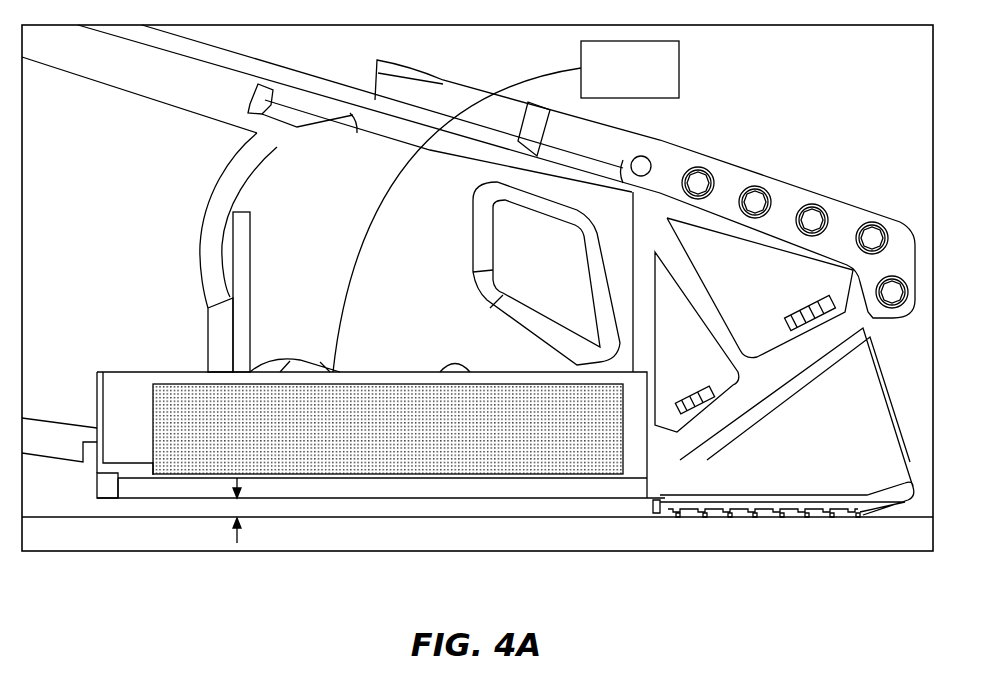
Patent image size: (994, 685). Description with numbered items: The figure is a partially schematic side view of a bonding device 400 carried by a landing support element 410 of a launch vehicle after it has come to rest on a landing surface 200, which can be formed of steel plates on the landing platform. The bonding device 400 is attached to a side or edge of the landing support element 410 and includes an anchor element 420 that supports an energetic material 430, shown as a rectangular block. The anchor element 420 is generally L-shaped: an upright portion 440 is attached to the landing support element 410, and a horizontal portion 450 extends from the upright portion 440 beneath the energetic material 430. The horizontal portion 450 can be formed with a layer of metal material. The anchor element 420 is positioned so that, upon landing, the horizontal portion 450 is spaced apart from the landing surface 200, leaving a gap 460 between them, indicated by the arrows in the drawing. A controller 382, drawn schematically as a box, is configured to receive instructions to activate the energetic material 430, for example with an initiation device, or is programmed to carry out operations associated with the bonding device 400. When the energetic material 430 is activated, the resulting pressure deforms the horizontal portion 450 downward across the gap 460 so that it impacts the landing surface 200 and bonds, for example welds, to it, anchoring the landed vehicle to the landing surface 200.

The landing support element 410 is at (65, 150).
The controller 382 is at (680, 70).
The anchor element 420 is at (130, 392).
The energetic material 430 is at (412, 457).
The upright portion 440 is at (634, 462).
The horizontal portion 450 is at (538, 487).
The gap 460 is at (254, 513).
The bonding device 400 is at (112, 511).
The landing surface 200 is at (315, 537).